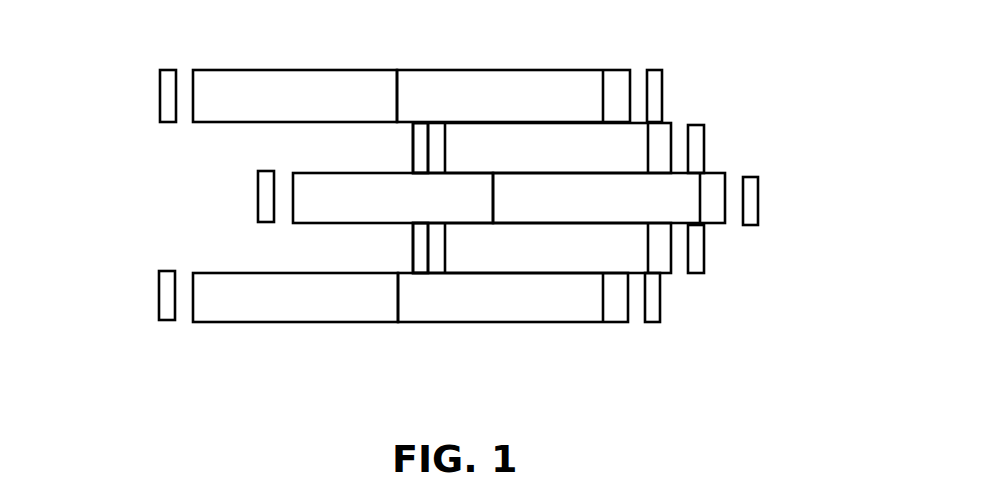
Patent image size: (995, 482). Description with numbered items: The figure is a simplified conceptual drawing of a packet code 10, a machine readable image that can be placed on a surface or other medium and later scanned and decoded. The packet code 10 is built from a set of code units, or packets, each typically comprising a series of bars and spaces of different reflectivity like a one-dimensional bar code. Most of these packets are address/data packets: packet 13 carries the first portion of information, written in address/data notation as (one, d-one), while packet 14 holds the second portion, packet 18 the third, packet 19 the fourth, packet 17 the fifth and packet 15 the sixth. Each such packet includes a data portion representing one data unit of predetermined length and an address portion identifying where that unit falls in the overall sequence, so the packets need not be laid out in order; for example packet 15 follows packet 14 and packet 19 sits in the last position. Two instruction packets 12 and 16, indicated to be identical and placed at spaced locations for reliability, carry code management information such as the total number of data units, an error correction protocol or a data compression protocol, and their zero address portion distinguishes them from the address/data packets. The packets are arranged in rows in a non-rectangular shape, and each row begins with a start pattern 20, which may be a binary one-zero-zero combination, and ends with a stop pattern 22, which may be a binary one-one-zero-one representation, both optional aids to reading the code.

The packet code 10 is at (80, 201).
The instruction packet 12 is at (285, 70).
The address/data packet 13 is at (489, 70).
The address/data packet 14 is at (630, 146).
The address/data packet 15 is at (318, 171).
The instruction packet 16 is at (672, 210).
The address/data packet 17 is at (635, 252).
The address/data packet 18 is at (250, 322).
The address/data packet 19 is at (437, 322).
The start pattern 20 is at (158, 92).
The stop pattern 22 is at (662, 80).